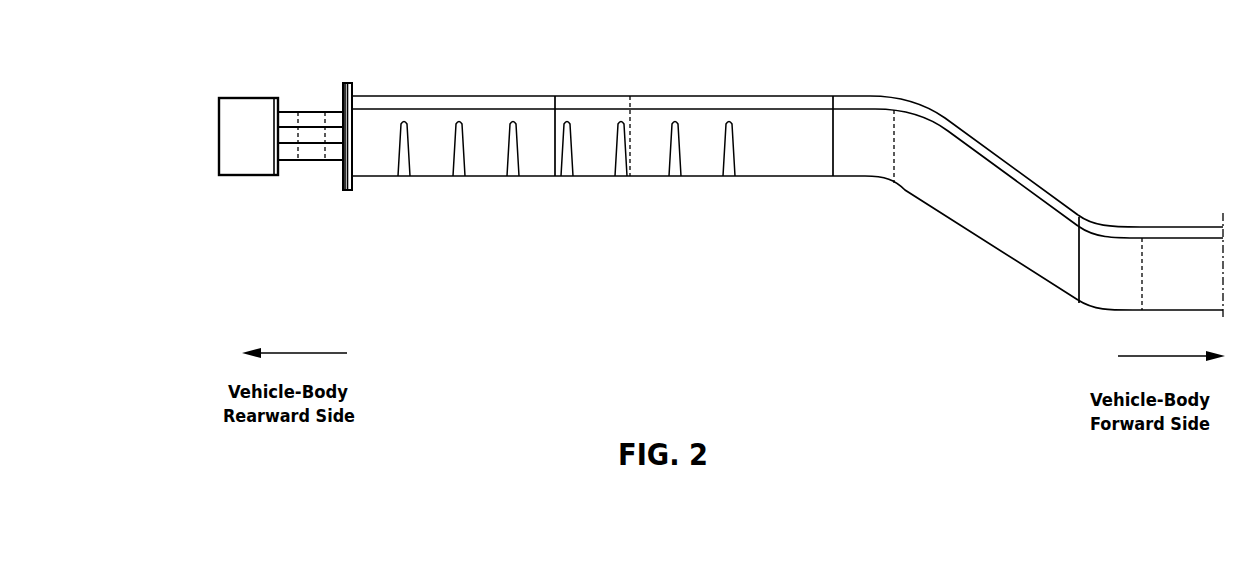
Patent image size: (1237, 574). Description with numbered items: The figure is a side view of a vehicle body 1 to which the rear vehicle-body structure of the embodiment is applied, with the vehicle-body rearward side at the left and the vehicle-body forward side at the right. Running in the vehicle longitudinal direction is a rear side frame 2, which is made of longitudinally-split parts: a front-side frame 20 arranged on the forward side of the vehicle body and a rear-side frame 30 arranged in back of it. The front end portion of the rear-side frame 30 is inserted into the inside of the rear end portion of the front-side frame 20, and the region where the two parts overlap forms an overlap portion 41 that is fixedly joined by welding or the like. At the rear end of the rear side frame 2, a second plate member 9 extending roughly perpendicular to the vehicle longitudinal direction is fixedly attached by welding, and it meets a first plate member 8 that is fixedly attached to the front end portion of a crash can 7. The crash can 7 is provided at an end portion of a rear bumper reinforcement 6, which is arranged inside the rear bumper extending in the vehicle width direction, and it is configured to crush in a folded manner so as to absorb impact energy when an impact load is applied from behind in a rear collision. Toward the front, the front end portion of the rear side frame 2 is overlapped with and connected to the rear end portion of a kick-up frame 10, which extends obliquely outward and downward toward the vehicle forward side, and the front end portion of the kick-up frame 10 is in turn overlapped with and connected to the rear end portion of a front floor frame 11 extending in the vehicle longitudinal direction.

The vehicle body 1 is at (726, 166).
The rear side frame 2 is at (787, 208).
The rear bumper reinforcement 6 is at (240, 176).
The crash can 7 is at (313, 162).
The first plate member 8 is at (343, 98).
The second plate member 9 is at (345, 82).
The kick-up frame 10 is at (1018, 170).
The front floor frame 11 is at (1186, 226).
The front-side frame 20 is at (750, 178).
The rear-side frame 30 is at (492, 178).
The overlap portion 41 is at (590, 163).